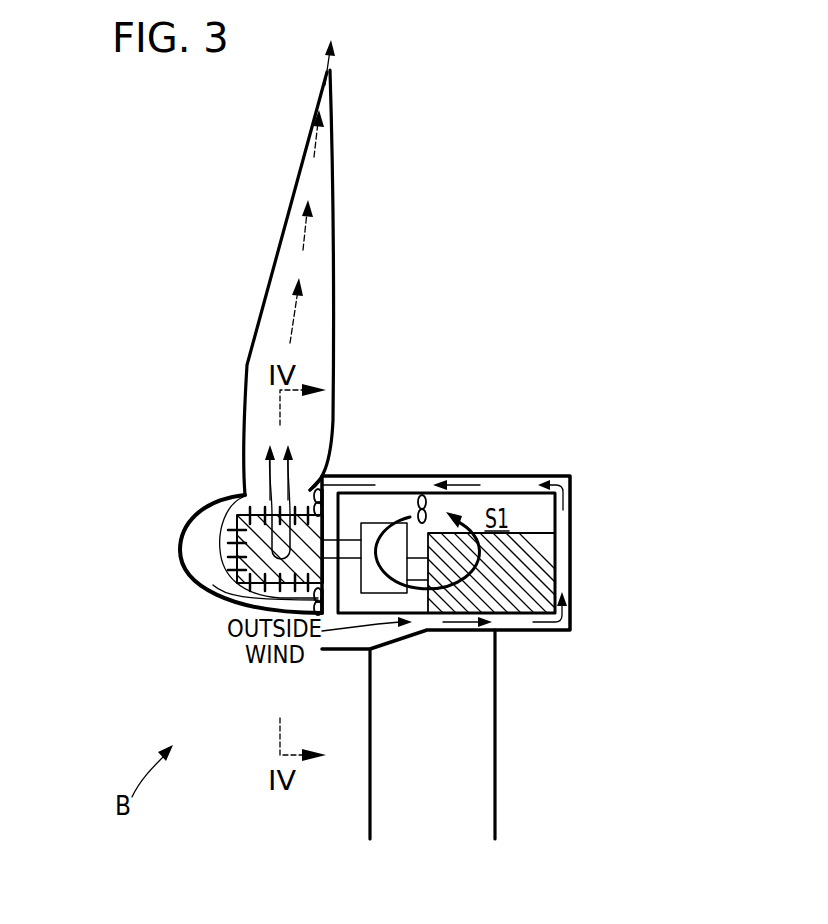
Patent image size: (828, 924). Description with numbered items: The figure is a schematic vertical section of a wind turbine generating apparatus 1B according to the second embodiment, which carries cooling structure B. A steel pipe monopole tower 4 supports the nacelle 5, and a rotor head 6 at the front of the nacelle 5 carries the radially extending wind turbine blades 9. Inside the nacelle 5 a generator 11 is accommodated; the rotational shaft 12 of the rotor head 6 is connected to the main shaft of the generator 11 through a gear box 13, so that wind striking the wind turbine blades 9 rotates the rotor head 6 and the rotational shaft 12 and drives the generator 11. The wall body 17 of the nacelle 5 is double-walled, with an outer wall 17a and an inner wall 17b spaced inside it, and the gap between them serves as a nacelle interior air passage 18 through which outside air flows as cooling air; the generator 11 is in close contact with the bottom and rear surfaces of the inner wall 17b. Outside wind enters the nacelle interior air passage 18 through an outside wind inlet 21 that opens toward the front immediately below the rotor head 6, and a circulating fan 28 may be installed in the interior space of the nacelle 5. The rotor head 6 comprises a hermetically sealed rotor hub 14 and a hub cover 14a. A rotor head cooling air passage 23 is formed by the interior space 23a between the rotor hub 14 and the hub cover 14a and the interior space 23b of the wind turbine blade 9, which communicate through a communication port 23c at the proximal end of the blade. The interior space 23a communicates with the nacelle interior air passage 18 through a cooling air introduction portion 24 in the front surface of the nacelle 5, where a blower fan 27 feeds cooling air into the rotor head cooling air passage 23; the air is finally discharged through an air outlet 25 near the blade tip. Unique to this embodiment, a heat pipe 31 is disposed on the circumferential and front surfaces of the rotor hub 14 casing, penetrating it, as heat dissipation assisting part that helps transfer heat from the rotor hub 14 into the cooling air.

The wind turbine generating apparatus 1B is at (548, 128).
The tower 4 is at (496, 745).
The nacelle 5 is at (520, 517).
The rotor head 6 is at (194, 553).
The wind turbine blade 9 is at (277, 233).
The generator 11 is at (523, 600).
The rotational shaft 12 is at (350, 532).
The gear box 13 is at (382, 522).
The rotor hub 14 is at (237, 548).
The hub cover 14a is at (228, 540).
The wall body 17 is at (520, 562).
The outer wall 17a is at (571, 497).
The inner wall 17b is at (556, 516).
The nacelle interior air passage 18 is at (562, 560).
The outside wind inlet 21 is at (322, 642).
The rotor head cooling air passage 23 is at (308, 305).
The interior space 23a is at (207, 523).
The interior space of the wind turbine blade 23b is at (243, 390).
The communication port 23c is at (246, 499).
The cooling air introduction portion 24 is at (325, 497).
The air outlet 25 is at (327, 70).
The blower fan 27 is at (313, 493).
The circulating fan 28 is at (418, 493).
The heat pipe 31 is at (232, 572).